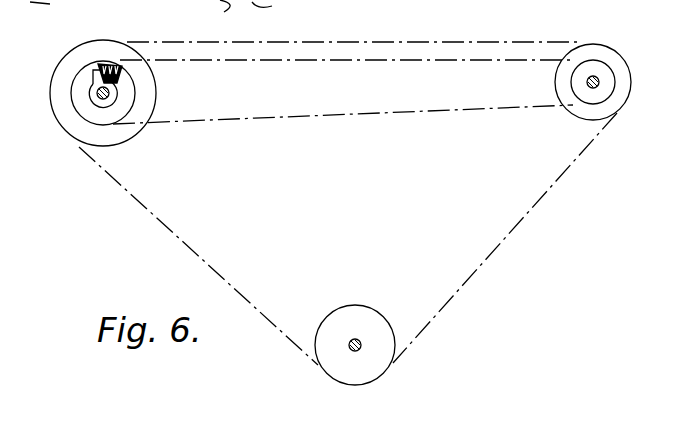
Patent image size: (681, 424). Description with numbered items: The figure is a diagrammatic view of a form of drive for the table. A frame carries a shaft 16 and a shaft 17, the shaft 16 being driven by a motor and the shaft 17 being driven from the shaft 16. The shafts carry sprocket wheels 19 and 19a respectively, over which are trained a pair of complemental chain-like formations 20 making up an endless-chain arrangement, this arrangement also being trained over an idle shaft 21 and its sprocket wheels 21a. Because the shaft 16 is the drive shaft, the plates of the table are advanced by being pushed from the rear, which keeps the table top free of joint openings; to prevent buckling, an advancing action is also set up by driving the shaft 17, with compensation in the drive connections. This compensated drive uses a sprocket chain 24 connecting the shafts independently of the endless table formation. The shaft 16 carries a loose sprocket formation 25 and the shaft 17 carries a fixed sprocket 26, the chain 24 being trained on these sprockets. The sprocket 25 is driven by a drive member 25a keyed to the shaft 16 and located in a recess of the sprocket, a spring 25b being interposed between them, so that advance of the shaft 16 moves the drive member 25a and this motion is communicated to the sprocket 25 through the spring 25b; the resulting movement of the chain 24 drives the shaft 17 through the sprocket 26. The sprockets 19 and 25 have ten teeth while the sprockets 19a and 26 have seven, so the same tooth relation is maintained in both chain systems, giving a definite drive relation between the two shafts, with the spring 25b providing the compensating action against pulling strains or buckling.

The shaft 16 is at (101, 101).
The shaft 17 is at (590, 88).
The sprocket wheel 19 is at (50, 78).
The sprocket wheel 19a is at (632, 84).
The chain-like formations 20 is at (406, 41).
The idle shaft 21 is at (360, 342).
The sprocket wheels 21a is at (358, 305).
The chain 24 is at (312, 117).
The loose sprocket formation 25 is at (127, 97).
The drive member 25a is at (90, 96).
The spring 25b is at (112, 66).
The fixed sprocket 26 is at (571, 82).